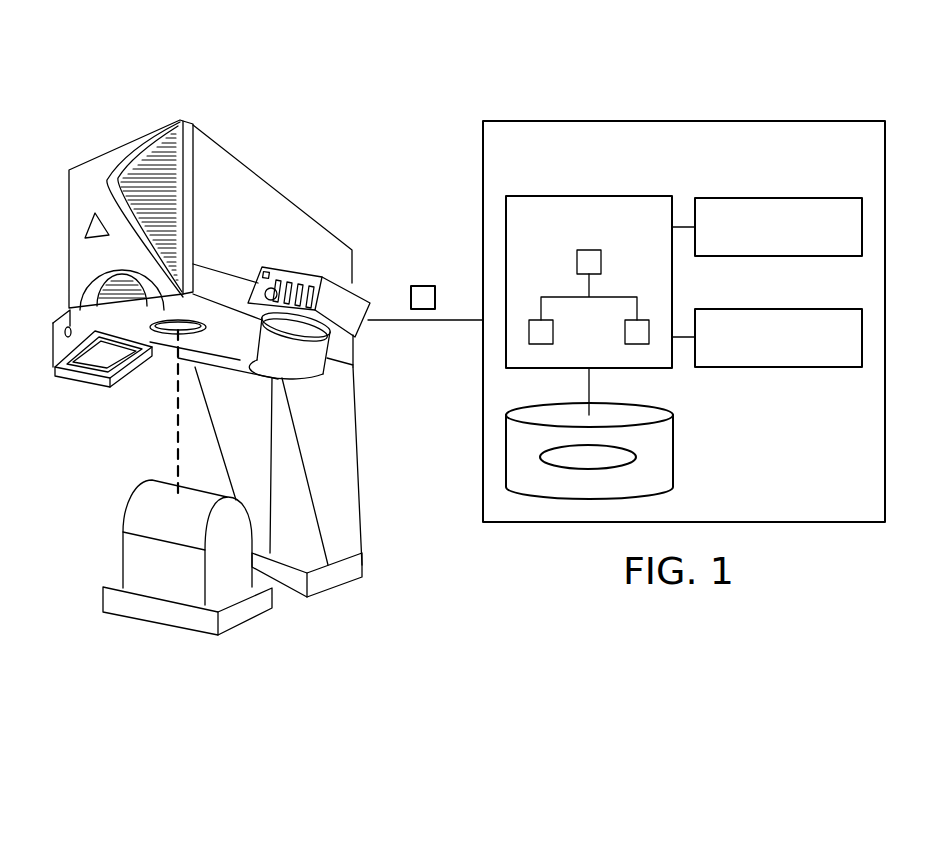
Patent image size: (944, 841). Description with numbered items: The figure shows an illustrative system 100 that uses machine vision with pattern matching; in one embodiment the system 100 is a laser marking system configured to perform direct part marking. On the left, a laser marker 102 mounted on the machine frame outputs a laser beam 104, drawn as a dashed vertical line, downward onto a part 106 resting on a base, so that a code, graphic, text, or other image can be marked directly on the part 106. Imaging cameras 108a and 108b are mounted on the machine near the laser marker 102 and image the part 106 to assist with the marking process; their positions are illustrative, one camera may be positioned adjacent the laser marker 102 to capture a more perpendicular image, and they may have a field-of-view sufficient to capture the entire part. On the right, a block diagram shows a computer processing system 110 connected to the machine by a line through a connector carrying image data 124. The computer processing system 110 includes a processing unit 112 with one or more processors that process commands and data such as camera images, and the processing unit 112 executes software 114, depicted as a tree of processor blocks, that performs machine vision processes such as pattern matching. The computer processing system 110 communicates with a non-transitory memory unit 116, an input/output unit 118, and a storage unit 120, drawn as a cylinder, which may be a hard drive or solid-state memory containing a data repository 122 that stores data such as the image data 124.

The system 100 is at (356, 64).
The laser marker 102 is at (197, 318).
The laser beam 104 is at (176, 396).
The part 106 is at (123, 556).
The imaging camera 108a is at (100, 357).
The imaging camera 108b is at (300, 368).
The computer processing system 110 is at (726, 117).
The processing unit 112 is at (600, 196).
The software 114 is at (636, 281).
The memory unit 116 is at (778, 368).
The input/output (I/O) unit 118 is at (778, 197).
The storage unit 120 is at (673, 468).
The data repository 122 is at (637, 457).
The image data 124 is at (423, 285).